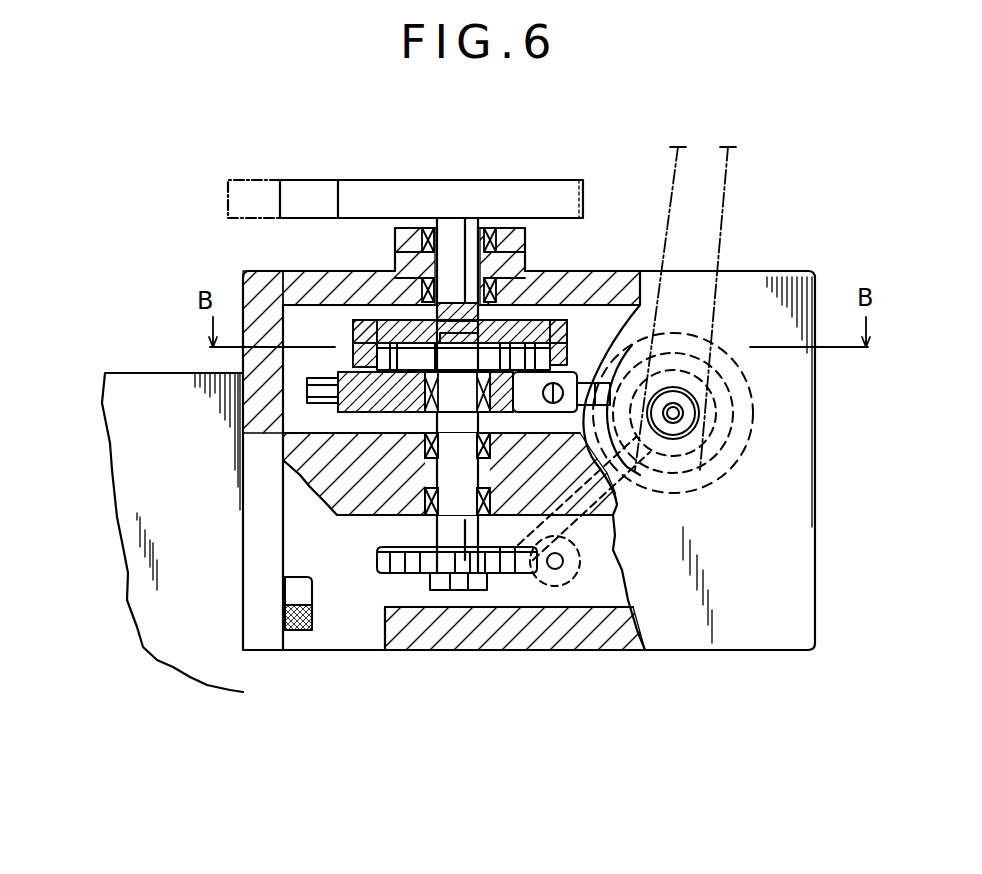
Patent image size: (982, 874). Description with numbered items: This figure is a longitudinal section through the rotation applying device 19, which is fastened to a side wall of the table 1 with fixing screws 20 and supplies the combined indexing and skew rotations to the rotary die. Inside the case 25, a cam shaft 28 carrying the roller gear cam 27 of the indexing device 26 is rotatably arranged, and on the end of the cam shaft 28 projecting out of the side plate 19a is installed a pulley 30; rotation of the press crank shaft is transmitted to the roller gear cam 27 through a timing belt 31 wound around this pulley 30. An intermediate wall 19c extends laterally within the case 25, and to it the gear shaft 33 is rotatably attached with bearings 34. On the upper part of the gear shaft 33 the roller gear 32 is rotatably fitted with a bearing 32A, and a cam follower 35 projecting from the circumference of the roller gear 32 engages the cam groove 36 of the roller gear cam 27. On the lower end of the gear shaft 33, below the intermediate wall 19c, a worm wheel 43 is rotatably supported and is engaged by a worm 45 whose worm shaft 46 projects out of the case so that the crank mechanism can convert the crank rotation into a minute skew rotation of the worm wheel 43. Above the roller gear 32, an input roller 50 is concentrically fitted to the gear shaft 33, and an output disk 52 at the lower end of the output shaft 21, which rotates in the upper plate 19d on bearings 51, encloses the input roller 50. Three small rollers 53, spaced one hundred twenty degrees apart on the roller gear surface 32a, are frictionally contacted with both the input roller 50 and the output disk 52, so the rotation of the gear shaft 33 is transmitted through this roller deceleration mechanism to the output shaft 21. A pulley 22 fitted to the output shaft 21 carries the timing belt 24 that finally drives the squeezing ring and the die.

The table 1 is at (205, 653).
The rotation applying device 19 is at (615, 630).
The side plate 19a is at (745, 557).
The intermediate wall 19c is at (350, 485).
The upper plate 19d is at (320, 285).
The fixing screws 20 is at (300, 632).
The output shaft 21 is at (455, 240).
The pulley 22 is at (388, 195).
The timing belt 24 is at (252, 190).
The case 25 is at (765, 632).
The indexing device 26 is at (604, 370).
The roller gear cam 27 is at (633, 350).
The cam shaft 28 is at (690, 440).
The pulley 30 is at (700, 420).
The timing belt 31 is at (730, 160).
The roller gear 32 is at (370, 370).
The roller gear surface 32a is at (360, 365).
The bearing 32A is at (427, 415).
The gear shaft 33 is at (462, 560).
The bearings 34 is at (425, 445).
The cam follower 35 is at (615, 329).
The cam groove 36 is at (645, 345).
The worm wheel 43 is at (390, 575).
The worm 45 is at (565, 580).
The worm shaft 46 is at (549, 570).
The input roller 50 is at (417, 358).
The bearings 51 is at (510, 230).
The output disk 52 is at (540, 330).
The small rollers 53 is at (580, 320).